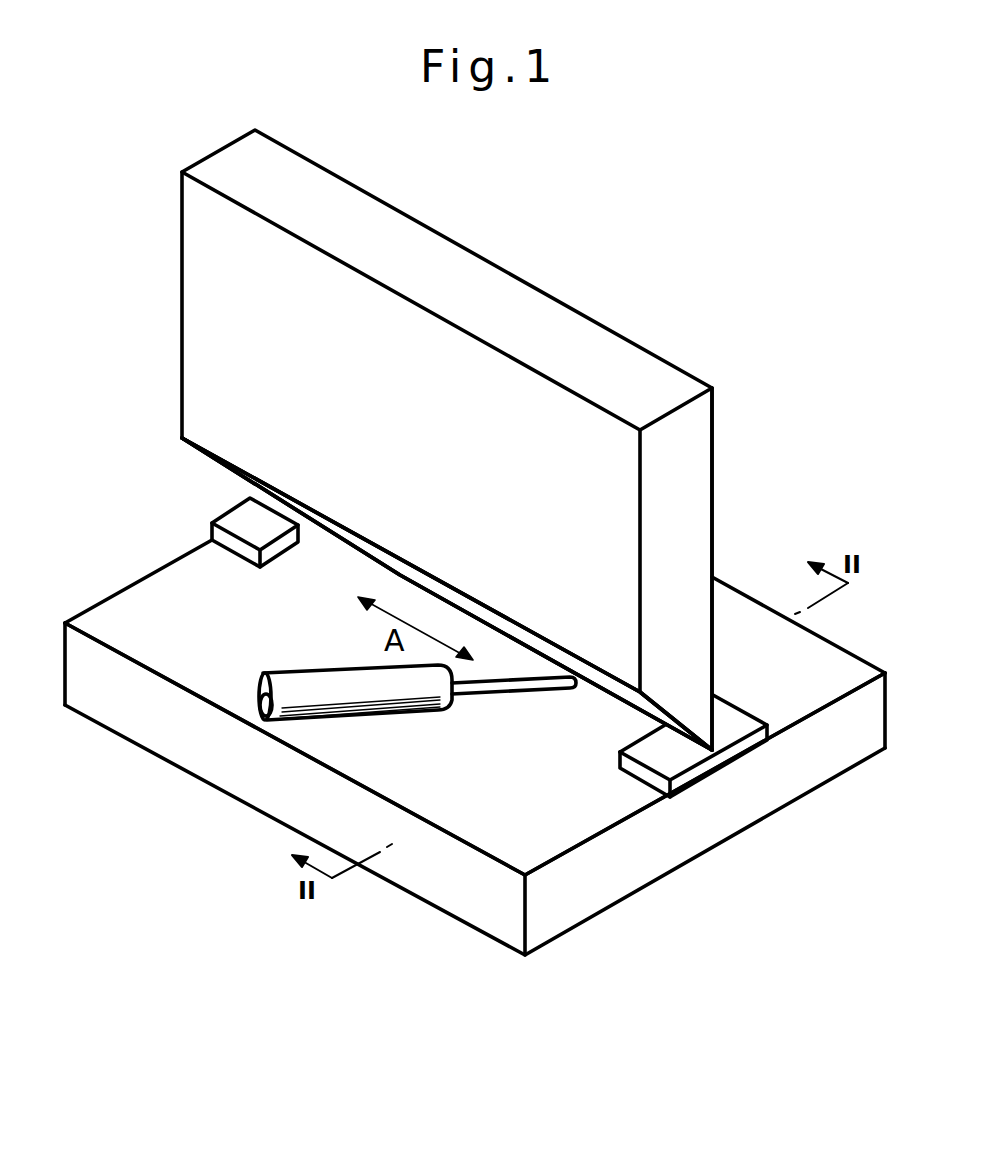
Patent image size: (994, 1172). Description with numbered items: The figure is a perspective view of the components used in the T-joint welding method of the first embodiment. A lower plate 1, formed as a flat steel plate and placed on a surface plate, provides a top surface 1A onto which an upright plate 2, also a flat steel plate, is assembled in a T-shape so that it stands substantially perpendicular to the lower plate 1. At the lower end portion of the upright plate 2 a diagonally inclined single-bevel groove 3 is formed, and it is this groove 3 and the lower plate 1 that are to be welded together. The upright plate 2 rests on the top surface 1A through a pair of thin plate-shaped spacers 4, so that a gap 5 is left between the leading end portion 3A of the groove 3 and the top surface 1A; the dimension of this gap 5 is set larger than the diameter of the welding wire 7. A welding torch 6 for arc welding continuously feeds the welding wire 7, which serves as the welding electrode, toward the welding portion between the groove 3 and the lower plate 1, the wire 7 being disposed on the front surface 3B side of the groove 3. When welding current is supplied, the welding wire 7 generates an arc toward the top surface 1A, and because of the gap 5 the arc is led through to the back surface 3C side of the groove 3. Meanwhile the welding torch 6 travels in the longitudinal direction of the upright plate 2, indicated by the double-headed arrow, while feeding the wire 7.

The lower plate 1 is at (168, 743).
The top surface 1A is at (194, 620).
The upright plate 2 is at (480, 300).
The single-bevel groove 3 is at (697, 715).
The leading end portion 3A is at (711, 753).
The front surface 3B is at (633, 700).
The back surface 3C is at (713, 680).
The spacers 4 is at (237, 517).
The gap 5 is at (584, 698).
The welding torch 6 is at (305, 696).
The welding wire 7 is at (535, 677).